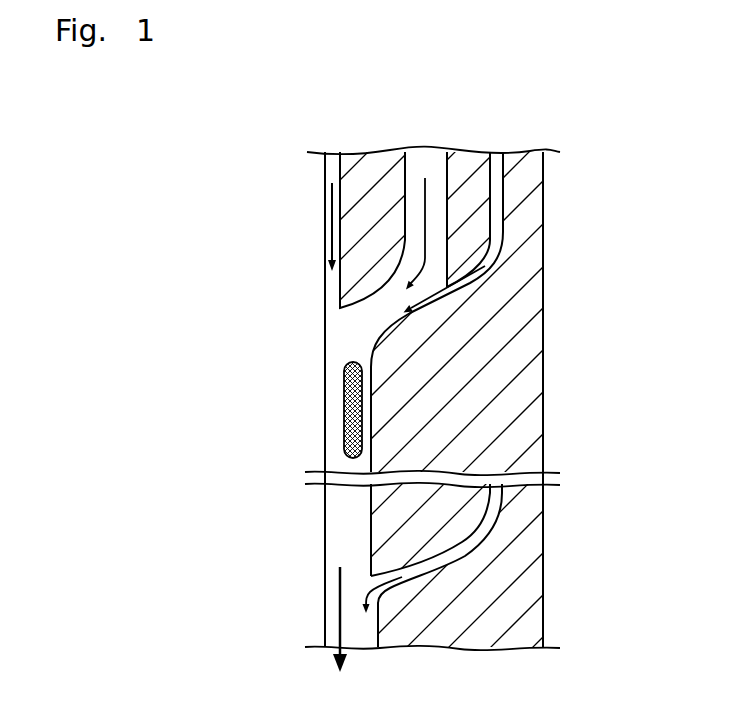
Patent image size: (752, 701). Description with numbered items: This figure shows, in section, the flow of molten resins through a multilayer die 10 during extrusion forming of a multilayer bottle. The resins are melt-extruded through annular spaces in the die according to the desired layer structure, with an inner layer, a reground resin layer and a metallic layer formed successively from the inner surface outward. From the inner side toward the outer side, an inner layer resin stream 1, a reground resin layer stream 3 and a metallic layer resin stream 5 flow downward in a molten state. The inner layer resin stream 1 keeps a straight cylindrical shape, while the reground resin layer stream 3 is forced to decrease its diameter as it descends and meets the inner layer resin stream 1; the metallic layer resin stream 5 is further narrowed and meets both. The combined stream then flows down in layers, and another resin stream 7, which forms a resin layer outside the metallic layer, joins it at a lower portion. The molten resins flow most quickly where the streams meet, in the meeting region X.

The inner layer resin stream 1 is at (333, 152).
The reground resin layer stream 3 is at (430, 154).
The metallic layer resin stream 5 is at (498, 154).
The resin stream 7 is at (485, 523).
The multilayer die 10 is at (525, 293).
The meeting region X is at (345, 408).